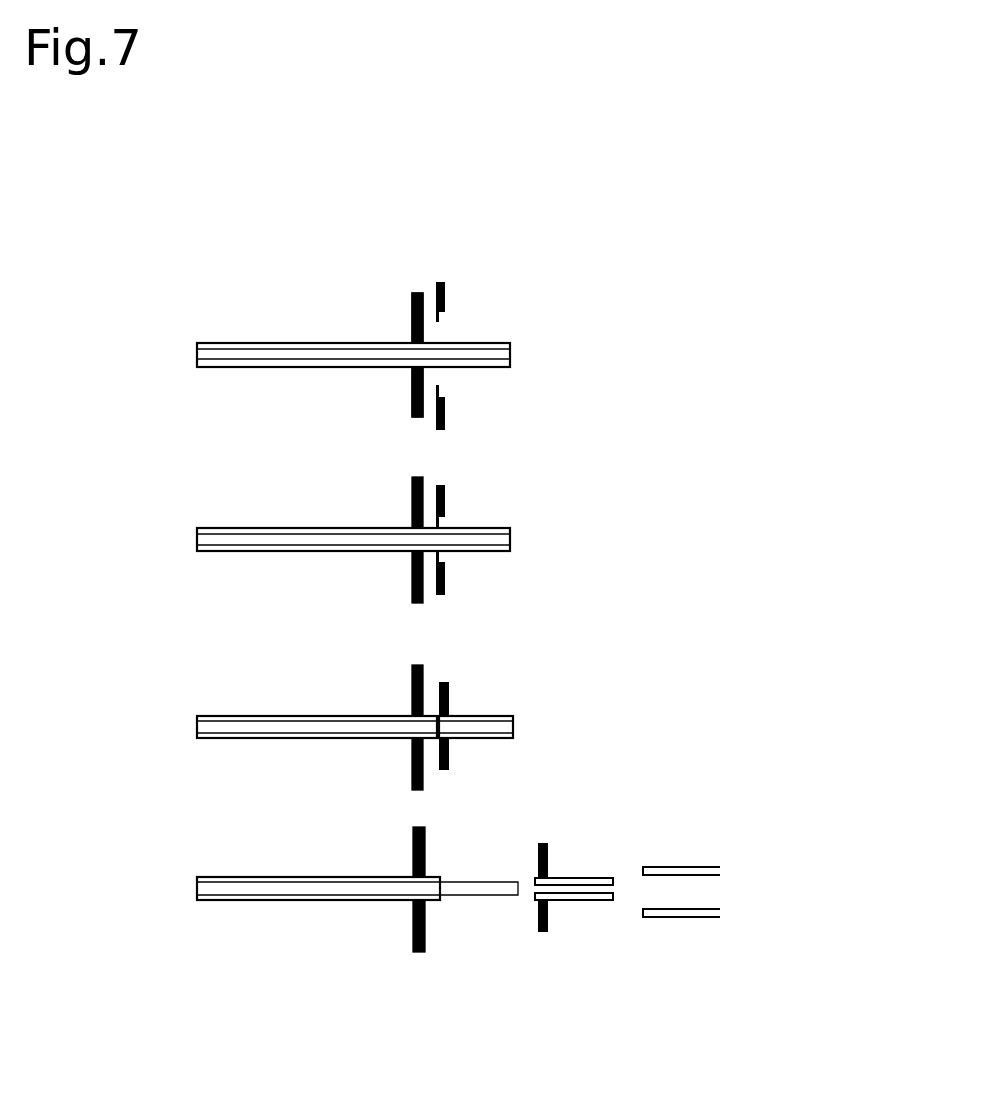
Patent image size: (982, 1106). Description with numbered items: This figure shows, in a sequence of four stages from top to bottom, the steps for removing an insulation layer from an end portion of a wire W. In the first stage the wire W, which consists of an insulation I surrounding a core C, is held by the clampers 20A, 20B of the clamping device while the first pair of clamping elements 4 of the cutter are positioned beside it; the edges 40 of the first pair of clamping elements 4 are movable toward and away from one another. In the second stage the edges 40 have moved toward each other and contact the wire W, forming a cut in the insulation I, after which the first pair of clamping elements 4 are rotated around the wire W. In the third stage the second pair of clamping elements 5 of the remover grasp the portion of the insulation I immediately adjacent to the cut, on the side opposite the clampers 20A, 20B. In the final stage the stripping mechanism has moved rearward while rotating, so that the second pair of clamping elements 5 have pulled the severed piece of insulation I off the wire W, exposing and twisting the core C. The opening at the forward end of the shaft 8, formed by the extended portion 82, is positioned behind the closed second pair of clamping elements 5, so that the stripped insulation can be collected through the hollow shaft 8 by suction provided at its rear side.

The wire W is at (278, 343).
The clamper 20A is at (417, 293).
The clamper 20B is at (400, 318).
The first pair of clamping elements 4 is at (446, 290).
The edges 40 is at (440, 318).
The second pair of clamping elements 5 is at (450, 690).
The insulation I is at (497, 343).
The core C is at (500, 355).
The shaft 8 is at (731, 855).
The extended portion 82 is at (687, 867).